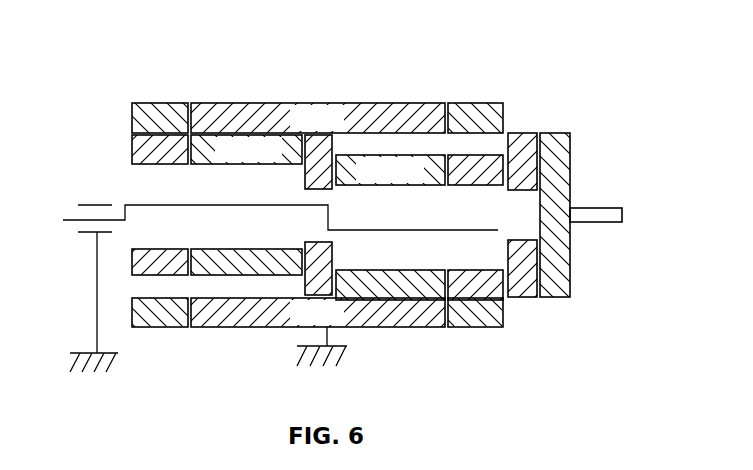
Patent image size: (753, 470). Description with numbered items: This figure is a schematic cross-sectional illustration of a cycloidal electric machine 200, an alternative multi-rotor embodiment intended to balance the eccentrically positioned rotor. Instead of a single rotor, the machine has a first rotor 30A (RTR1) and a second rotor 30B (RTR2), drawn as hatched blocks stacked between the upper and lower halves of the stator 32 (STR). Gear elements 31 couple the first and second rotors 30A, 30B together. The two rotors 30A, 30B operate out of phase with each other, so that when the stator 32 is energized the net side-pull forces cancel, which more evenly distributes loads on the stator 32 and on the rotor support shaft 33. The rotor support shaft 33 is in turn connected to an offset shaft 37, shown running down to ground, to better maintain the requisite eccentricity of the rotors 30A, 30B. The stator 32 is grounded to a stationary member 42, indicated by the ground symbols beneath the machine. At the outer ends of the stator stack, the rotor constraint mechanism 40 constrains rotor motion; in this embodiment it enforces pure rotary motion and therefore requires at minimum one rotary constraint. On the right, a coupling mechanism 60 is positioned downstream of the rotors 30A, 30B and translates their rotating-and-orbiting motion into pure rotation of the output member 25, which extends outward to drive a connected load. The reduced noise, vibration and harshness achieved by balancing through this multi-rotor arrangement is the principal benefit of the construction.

The cycloidal electric machine 200 is at (568, 32).
The rotor constraint mechanism 40 is at (188, 95).
The stator 32 is at (375, 103).
The first rotor 30A is at (207, 166).
The second rotor 30B is at (365, 186).
The gear elements 31 is at (317, 270).
The coupling mechanism 60 is at (570, 130).
The output member 25 is at (596, 208).
The rotor support shaft 33 is at (128, 202).
The offset shaft 37 is at (97, 293).
The stationary member 42 is at (118, 356).